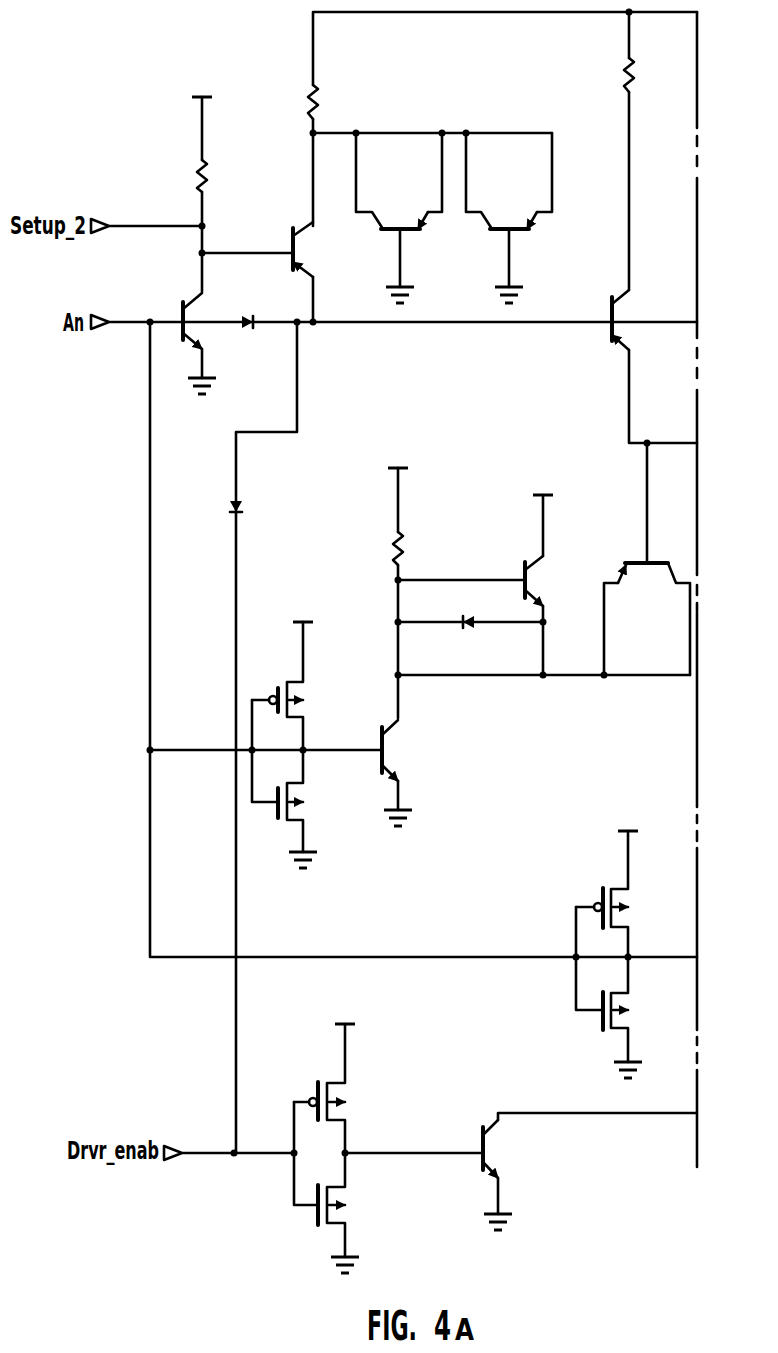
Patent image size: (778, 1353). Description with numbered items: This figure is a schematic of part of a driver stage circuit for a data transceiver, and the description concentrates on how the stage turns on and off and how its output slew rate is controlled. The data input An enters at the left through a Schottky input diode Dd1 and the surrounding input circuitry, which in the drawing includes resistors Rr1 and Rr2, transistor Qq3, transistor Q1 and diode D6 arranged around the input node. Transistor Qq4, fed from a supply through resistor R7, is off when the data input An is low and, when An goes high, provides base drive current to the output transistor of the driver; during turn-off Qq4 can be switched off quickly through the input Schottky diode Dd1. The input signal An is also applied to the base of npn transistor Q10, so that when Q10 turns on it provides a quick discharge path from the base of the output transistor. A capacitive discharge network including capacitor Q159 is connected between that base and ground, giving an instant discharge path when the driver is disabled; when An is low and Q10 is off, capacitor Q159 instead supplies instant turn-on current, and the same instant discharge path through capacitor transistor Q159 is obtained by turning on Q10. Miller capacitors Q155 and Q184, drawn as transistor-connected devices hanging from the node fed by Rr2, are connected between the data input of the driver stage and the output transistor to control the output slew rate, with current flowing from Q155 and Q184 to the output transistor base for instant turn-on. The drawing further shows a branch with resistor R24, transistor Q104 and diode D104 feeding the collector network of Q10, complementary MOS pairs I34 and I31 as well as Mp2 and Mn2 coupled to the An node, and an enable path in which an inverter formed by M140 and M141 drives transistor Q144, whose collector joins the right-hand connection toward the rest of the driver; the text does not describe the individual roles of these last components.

The resistor Rr1 is at (220, 176).
The resistor Rr2 is at (332, 102).
The resistor R7 is at (644, 75).
The resistor R24 is at (419, 548).
The PNP transistor Qq3 is at (317, 272).
The transistor Qq4 is at (640, 320).
The NPN transistor Q1 is at (206, 324).
The input Schottky diode Dd1 is at (248, 306).
The Miller capacitor Q155 is at (399, 210).
The Miller capacitor Q184 is at (509, 210).
The diode D6 is at (254, 508).
The diode D104 is at (465, 606).
The NPN transistor Q104 is at (553, 581).
The capacitor Q159 is at (647, 619).
The npn transistor Q10 is at (404, 750).
The PMOS transistor I34 is at (295, 686).
The NMOS transistor I31 is at (294, 776).
The PMOS transistor Mp2 is at (624, 894).
The NMOS transistor Mn2 is at (624, 984).
The PMOS transistor M140 is at (350, 1088).
The NMOS transistor M141 is at (347, 1179).
The NPN transistor Q144 is at (512, 1149).